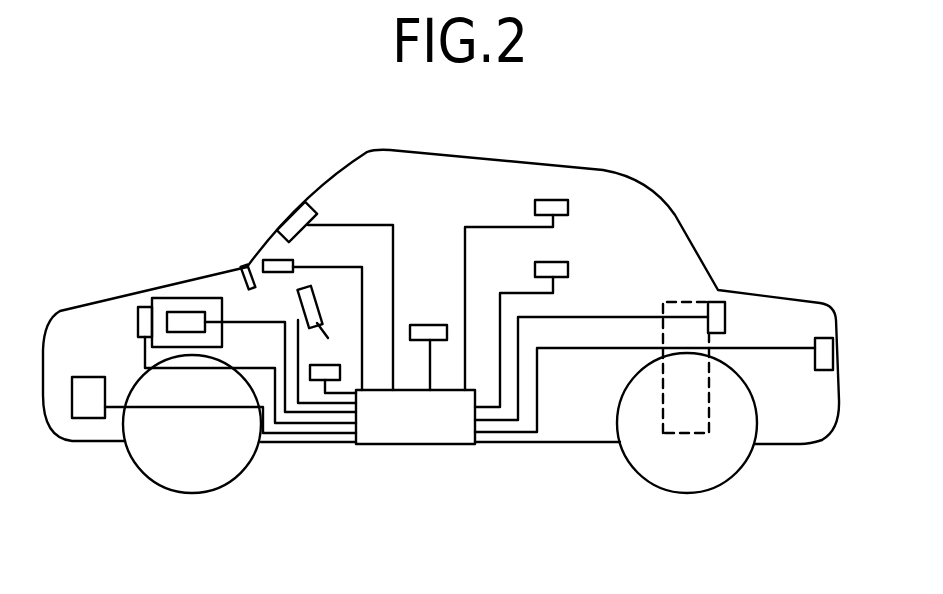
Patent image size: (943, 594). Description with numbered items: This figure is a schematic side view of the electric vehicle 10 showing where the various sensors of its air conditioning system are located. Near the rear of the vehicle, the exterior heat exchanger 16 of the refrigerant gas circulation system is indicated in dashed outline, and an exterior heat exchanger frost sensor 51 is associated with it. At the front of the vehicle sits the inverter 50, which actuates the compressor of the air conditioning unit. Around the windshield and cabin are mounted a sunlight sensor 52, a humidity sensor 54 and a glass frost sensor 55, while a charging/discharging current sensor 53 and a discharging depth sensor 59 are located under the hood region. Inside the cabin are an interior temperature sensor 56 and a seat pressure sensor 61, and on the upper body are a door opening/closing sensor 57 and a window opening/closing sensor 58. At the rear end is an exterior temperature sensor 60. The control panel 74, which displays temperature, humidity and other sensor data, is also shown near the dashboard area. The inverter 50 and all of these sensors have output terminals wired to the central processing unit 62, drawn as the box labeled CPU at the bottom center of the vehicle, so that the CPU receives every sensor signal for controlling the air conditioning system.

The electric vehicle 10 is at (368, 137).
The exterior heat exchanger 16 is at (667, 301).
The inverter 50 is at (92, 410).
The exterior heat exchanger frost sensor 51 is at (717, 302).
The sunlight sensor 52 is at (277, 260).
The charging/discharging current sensor 53 is at (137, 321).
The humidity sensor 54 is at (293, 217).
The glass frost sensor 55 is at (243, 270).
The interior temperature sensor 56 is at (432, 327).
The door opening/closing sensor 57 is at (568, 264).
The window opening/closing sensor 58 is at (551, 200).
The discharging depth sensor 59 is at (173, 313).
The exterior temperature sensor 60 is at (822, 338).
The seat pressure sensor 61 is at (327, 365).
The central processing unit (CPU) 62 is at (404, 446).
The control panel 74 is at (298, 304).